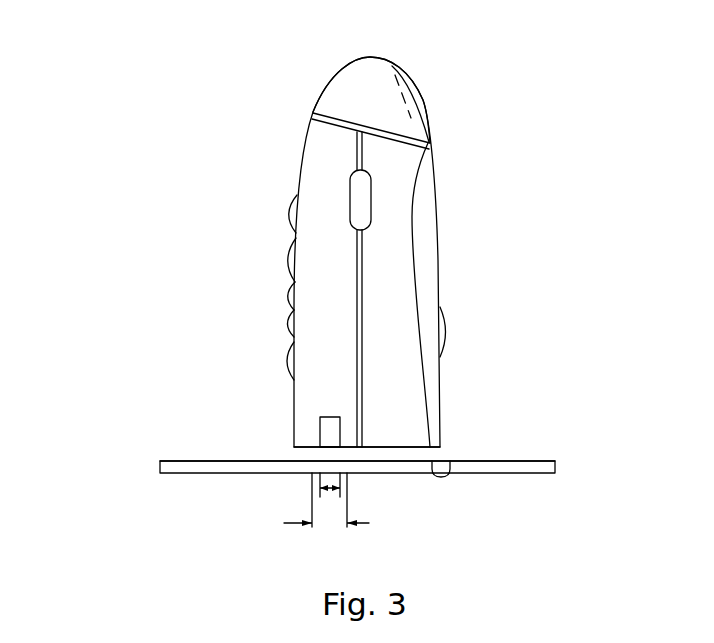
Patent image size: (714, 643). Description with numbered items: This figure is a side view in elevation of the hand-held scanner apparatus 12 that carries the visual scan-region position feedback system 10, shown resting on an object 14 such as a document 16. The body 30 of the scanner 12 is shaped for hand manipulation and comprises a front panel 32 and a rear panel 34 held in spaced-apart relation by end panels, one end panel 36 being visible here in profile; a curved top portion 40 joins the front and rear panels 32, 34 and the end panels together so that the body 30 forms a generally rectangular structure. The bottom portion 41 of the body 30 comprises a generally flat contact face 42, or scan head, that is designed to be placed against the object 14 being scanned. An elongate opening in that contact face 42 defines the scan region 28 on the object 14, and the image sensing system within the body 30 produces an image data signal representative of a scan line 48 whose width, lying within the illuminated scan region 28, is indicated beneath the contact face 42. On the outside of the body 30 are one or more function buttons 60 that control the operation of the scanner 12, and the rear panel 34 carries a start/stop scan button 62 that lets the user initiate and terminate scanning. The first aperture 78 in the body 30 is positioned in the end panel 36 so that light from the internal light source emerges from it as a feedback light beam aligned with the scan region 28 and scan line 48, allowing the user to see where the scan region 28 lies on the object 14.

The visual scan-region position feedback system 10 is at (88, 76).
The scanner apparatus 12 is at (346, 58).
The object 14 is at (218, 480).
The document 16 is at (193, 460).
The scan region 28 is at (300, 523).
The body 30 is at (430, 118).
The front panel 32 is at (305, 143).
The rear panel 34 is at (437, 190).
The end panel 36 is at (405, 363).
The curved top portion 40 is at (394, 64).
The bottom portion 41 is at (441, 447).
The contact face 42 is at (447, 463).
The scan line 48 is at (332, 492).
The function buttons 60 is at (372, 218).
The start/stop scan button 62 is at (447, 338).
The first aperture 78 is at (320, 432).